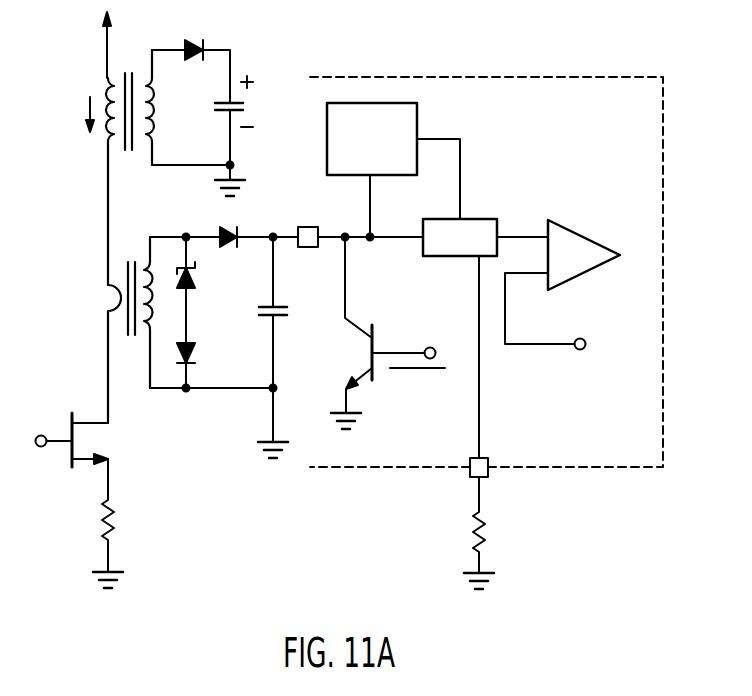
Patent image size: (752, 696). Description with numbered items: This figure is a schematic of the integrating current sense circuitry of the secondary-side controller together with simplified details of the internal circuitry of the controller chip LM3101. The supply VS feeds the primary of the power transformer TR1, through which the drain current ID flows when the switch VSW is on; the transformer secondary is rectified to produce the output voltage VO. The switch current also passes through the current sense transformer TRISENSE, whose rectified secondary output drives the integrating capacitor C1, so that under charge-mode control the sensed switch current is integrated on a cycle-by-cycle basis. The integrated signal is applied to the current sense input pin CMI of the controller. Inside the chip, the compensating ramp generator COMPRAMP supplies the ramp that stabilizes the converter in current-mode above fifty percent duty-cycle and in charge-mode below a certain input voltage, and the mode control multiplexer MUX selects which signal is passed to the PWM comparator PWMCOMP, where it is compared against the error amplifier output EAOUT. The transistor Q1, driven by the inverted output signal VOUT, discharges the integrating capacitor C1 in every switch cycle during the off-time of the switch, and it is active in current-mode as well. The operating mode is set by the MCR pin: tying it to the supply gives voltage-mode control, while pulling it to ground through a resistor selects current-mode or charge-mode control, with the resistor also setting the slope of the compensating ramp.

The supply voltage input VS is at (93, 43).
The drain current ID is at (78, 114).
The power transformer TR1 is at (130, 159).
The output voltage with rectifier diode and output capacitor VO is at (207, 116).
The current sense transformer TRISENSE is at (154, 313).
The integrating capacitor C1 is at (261, 347).
The switching FET VSW is at (80, 500).
The LM3101 controller integrated circuit LM3101 is at (486, 272).
The current sense input pin CMI is at (294, 223).
The compensating ramp COMPRAMP is at (393, 170).
The mode control multiplexer MUX is at (485, 338).
The PWM comparator PWMCOMP is at (584, 232).
The error amplifier output EAOUT is at (549, 328).
The discharge transistor Q1 is at (383, 333).
The inverted VOUT signal VOUT is at (417, 383).
The mode control pin MCR is at (460, 523).